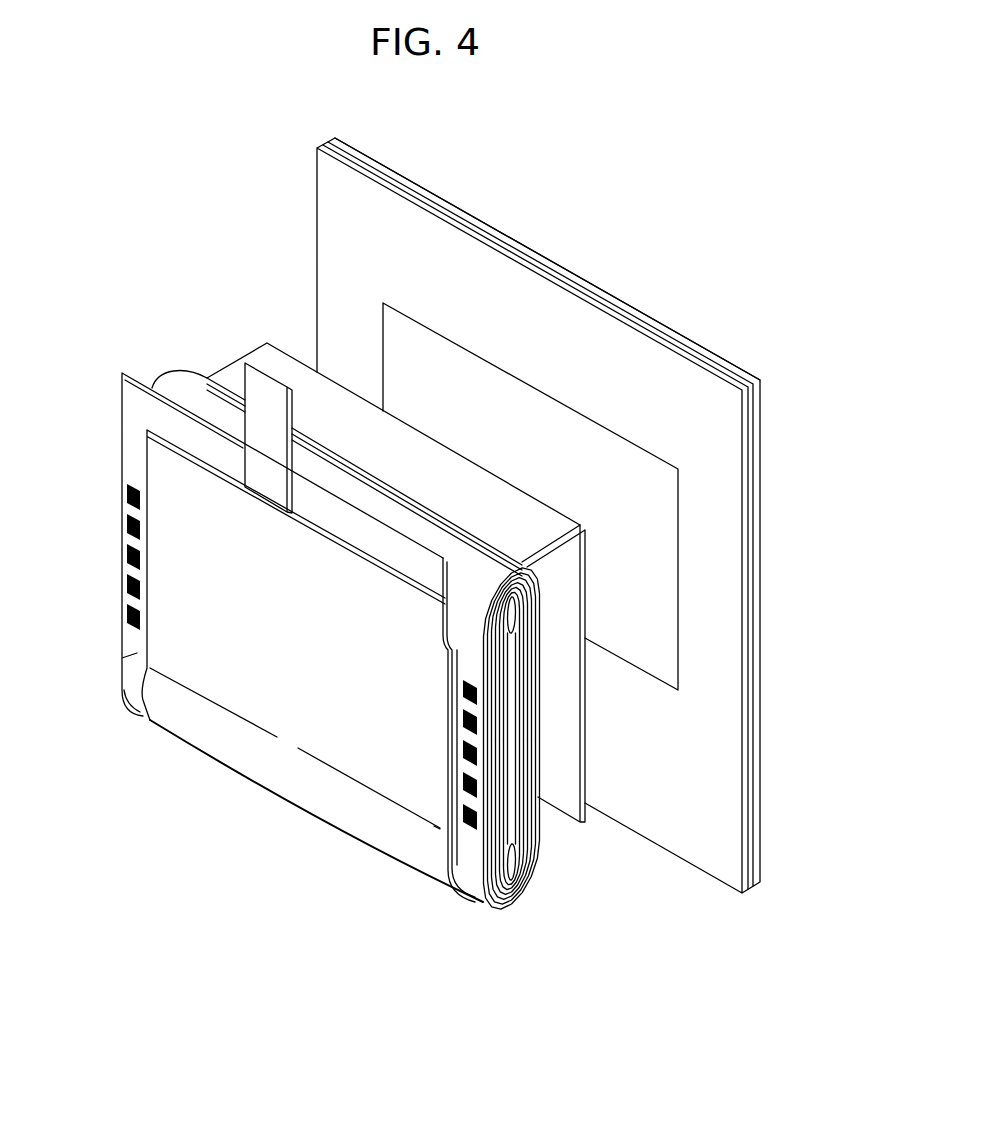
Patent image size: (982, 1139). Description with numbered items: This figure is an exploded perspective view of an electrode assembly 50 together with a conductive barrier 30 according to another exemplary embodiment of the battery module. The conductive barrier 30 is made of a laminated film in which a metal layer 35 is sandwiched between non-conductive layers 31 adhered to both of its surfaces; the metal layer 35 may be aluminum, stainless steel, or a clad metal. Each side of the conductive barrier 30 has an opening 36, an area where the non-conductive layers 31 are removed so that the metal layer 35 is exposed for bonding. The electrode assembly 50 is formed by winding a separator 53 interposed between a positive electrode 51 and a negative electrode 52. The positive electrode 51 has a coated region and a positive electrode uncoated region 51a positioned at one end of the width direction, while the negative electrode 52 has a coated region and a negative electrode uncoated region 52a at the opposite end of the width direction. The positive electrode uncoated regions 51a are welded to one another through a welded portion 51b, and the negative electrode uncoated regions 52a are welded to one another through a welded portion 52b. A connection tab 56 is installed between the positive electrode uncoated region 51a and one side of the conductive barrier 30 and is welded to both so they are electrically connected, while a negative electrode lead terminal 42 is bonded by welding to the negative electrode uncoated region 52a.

The conductive barrier 30 is at (565, 515).
The non-conductive layer 31 is at (477, 234).
The metal layer 35 is at (518, 252).
The opening 36 is at (658, 558).
The negative electrode lead terminal 42 is at (253, 382).
The electrode assembly 50 is at (412, 678).
The positive electrode 51 is at (497, 563).
The positive electrode uncoated region 51a is at (463, 860).
The welded portion 51b is at (472, 828).
The negative electrode 52 is at (260, 637).
The negative electrode uncoated region 52a is at (127, 683).
The welded portion 52b is at (125, 584).
The separator 53 is at (413, 520).
The connection tab 56 is at (571, 722).